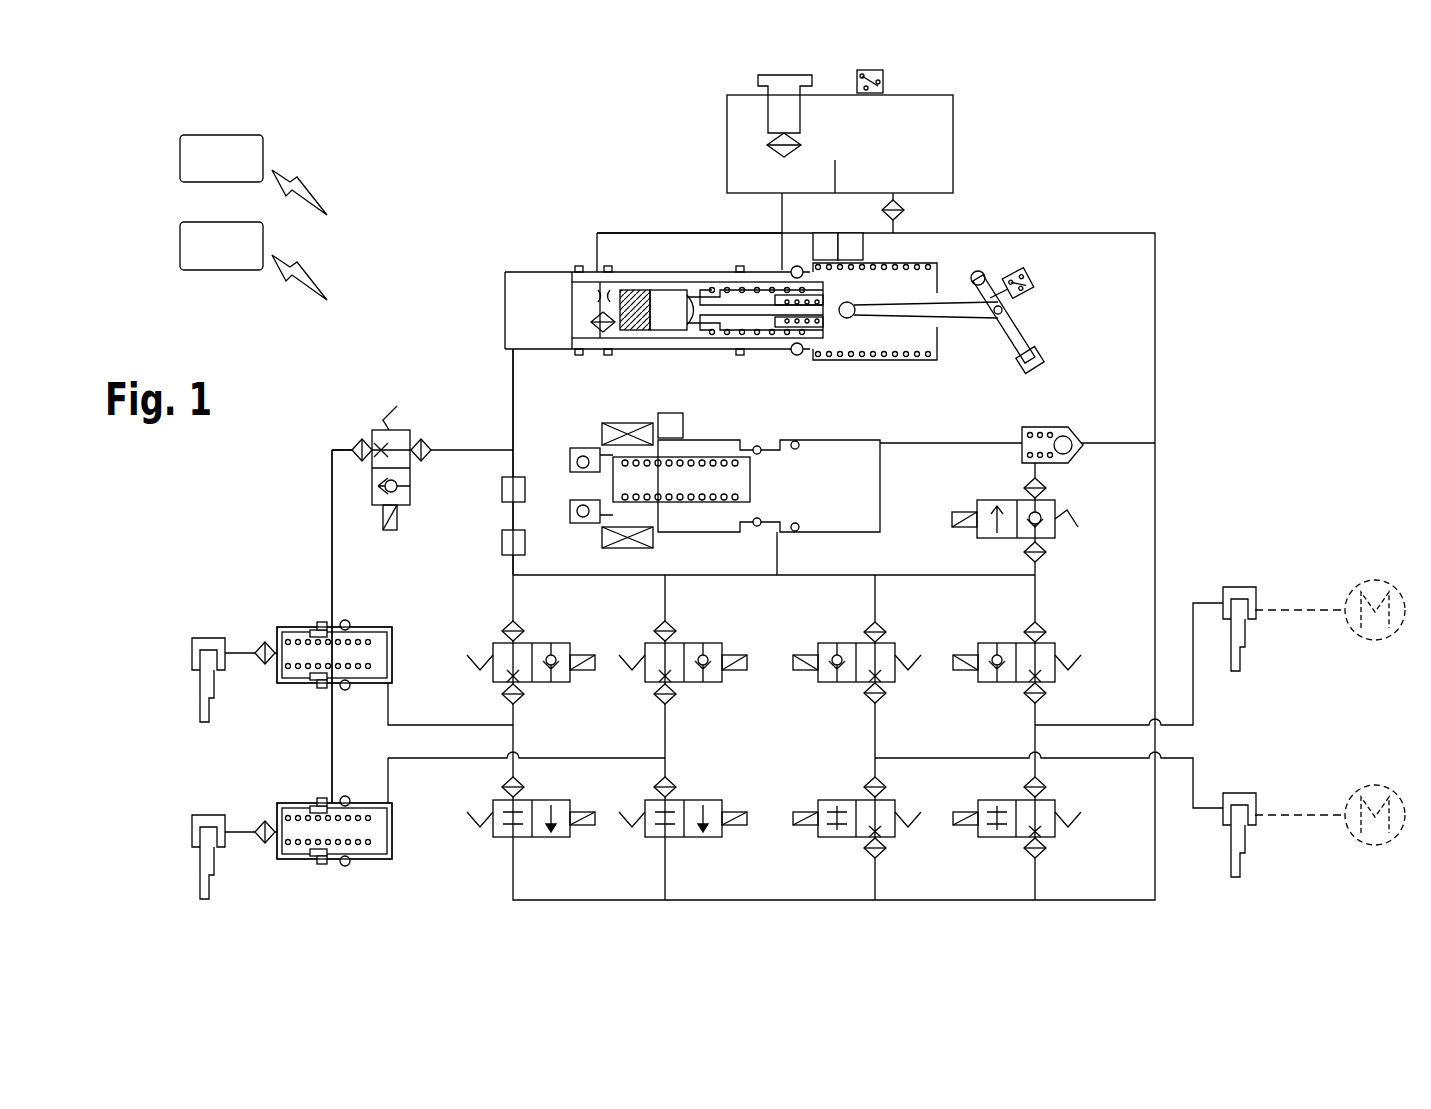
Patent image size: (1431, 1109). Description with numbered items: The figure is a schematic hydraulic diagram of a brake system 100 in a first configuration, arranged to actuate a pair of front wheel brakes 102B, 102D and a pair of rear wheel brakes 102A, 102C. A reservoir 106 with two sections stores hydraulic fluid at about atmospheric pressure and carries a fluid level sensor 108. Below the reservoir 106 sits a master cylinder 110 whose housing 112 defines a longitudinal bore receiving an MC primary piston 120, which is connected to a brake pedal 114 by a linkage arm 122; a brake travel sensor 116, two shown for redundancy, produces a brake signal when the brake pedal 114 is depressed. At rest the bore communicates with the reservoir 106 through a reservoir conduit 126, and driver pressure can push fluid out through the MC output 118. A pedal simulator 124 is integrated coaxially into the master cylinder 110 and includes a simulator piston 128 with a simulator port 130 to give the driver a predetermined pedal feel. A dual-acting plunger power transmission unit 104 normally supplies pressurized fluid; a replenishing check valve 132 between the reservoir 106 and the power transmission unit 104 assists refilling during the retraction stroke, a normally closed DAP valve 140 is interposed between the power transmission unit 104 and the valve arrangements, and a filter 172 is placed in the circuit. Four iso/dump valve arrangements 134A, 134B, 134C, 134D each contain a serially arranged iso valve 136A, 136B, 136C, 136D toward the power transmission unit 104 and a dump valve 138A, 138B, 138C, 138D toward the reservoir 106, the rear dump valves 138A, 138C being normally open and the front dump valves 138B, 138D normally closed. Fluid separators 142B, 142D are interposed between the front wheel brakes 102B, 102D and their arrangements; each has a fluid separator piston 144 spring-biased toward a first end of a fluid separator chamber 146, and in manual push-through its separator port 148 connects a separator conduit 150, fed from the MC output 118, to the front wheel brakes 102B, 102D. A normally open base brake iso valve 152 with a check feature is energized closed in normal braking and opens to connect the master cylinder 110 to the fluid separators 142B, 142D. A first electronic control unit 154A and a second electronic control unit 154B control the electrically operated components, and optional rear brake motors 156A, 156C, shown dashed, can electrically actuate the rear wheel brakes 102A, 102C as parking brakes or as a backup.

The brake system 100 is at (1170, 113).
The rear wheel brake 102A is at (1255, 602).
The front wheel brake 102B is at (190, 652).
The rear wheel brake 102C is at (1255, 807).
The front wheel brake 102D is at (190, 832).
The power transmission unit 104 is at (856, 432).
The reservoir 106 is at (913, 154).
The fluid level sensor 108 is at (880, 70).
The master cylinder 110 is at (950, 250).
The housing 112 is at (700, 280).
The brake pedal 114 is at (1048, 318).
The brake travel sensor 116 is at (852, 233).
The MC output 118 is at (513, 405).
The MC primary piston 120 is at (755, 312).
The linkage arm 122 is at (966, 328).
The pedal simulator 124 is at (568, 244).
The reservoir conduit 126 is at (725, 233).
The simulator piston 128 is at (645, 338).
The simulator port 130 is at (577, 284).
The replenishing check valve 132 is at (1092, 437).
The iso/dump valve arrangement 134A is at (1035, 906).
The iso/dump valve arrangement 134B is at (513, 906).
The iso/dump valve arrangement 134C is at (875, 906).
The iso/dump valve arrangement 134D is at (665, 906).
The iso valve 136A is at (1055, 643).
The iso valve 136B is at (561, 643).
The iso valve 136C is at (895, 643).
The iso valve 136D is at (715, 643).
The dump valve 138A is at (1055, 800).
The dump valve 138B is at (561, 800).
The dump valve 138C is at (895, 800).
The dump valve 138D is at (715, 800).
The DAP valve 140 is at (1082, 515).
The fluid separator 142B is at (366, 610).
The fluid separator 142D is at (351, 792).
The fluid separator piston 144 is at (380, 666).
The fluid separator chamber 146 is at (392, 640).
The separator port 148 is at (316, 625).
The separator conduit 150 is at (332, 497).
The base brake iso valve 152 is at (370, 413).
The first electronic control unit 154A is at (247, 171).
The second electronic control unit 154B is at (247, 259).
The rear brake motor 156A is at (1401, 588).
The rear brake motor 156C is at (1405, 798).
The filter 172 is at (1040, 560).